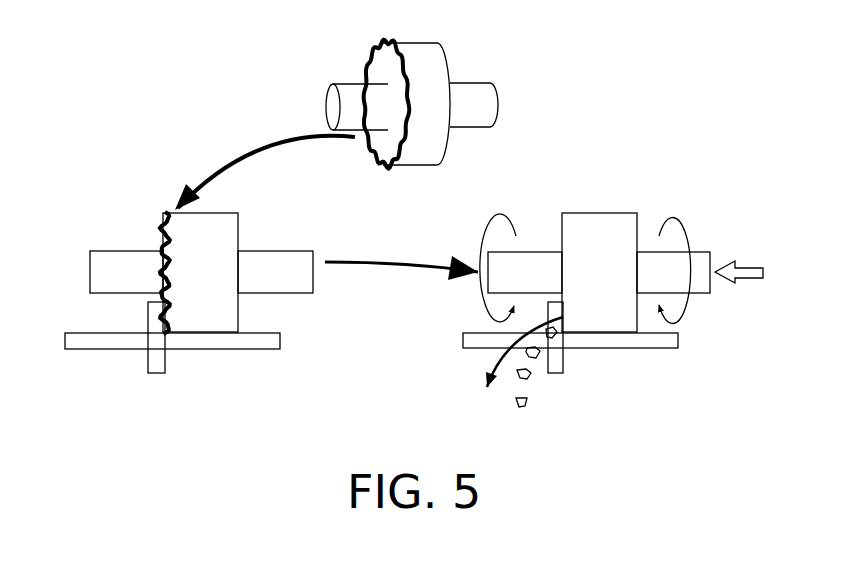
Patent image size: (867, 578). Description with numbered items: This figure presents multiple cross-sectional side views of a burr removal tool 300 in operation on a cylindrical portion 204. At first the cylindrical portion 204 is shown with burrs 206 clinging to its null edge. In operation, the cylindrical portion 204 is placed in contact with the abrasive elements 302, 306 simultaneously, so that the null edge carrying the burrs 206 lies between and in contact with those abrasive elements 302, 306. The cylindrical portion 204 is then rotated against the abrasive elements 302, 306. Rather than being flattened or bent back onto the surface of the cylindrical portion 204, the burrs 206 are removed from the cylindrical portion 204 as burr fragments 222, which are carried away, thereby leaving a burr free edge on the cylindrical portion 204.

The cylindrical portion 204 is at (452, 54).
The burrs 206 is at (369, 49).
The burr fragments 222 is at (559, 346).
The burr removal tool 300 is at (347, 371).
The abrasive element 302 is at (89, 353).
The abrasive element 306 is at (146, 310).